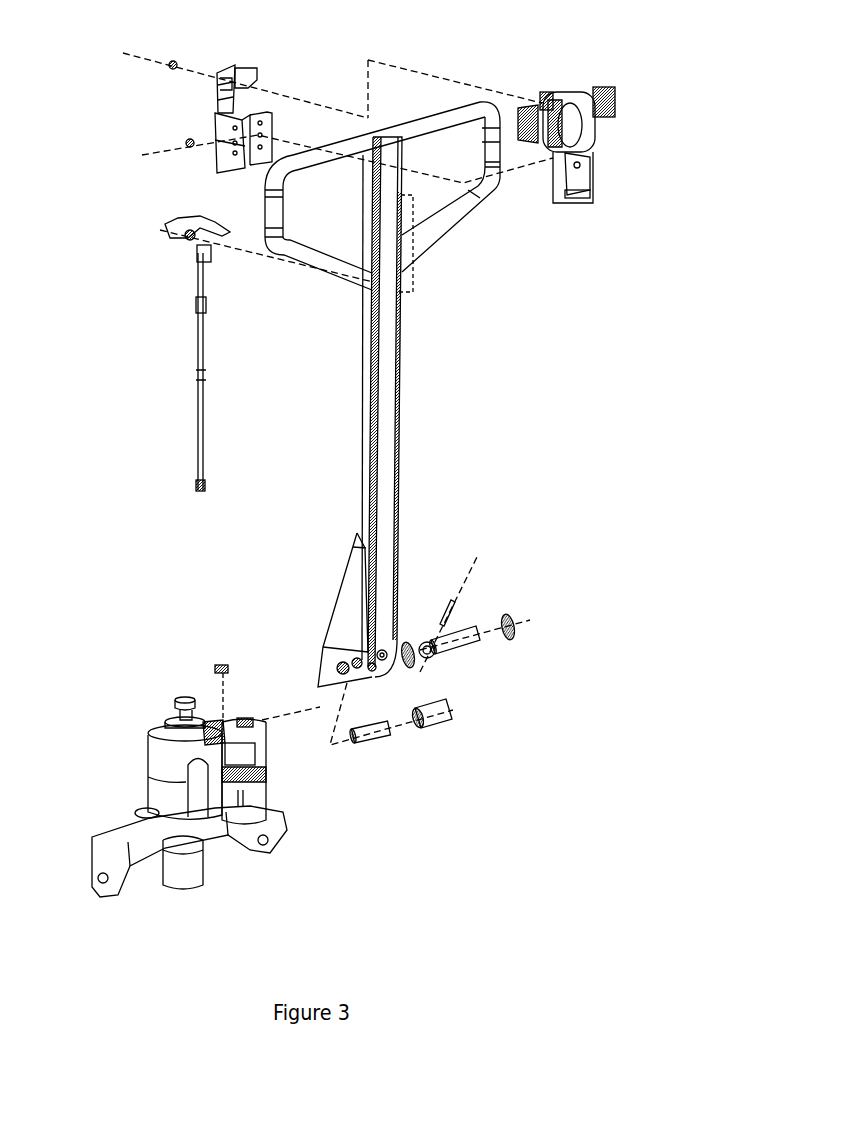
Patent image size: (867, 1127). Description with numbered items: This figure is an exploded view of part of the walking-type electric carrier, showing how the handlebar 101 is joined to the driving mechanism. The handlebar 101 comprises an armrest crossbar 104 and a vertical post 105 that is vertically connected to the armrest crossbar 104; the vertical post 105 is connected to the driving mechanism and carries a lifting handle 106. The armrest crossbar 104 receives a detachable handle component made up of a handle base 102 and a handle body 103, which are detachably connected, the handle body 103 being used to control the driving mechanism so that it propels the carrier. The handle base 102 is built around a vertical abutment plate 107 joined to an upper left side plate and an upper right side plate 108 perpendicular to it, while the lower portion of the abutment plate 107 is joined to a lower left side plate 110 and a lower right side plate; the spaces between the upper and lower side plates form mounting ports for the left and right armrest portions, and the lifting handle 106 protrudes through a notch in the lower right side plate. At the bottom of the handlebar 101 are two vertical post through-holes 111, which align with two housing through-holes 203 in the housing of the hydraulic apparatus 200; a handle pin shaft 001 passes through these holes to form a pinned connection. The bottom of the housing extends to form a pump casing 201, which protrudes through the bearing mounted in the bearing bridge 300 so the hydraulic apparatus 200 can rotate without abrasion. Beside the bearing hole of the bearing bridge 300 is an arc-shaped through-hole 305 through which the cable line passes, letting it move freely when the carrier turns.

The handlebar 101 is at (502, 333).
The handle base 102 is at (283, 48).
The handle body 103 is at (562, 72).
The armrest crossbar 104 is at (442, 98).
The vertical post 105 is at (387, 392).
The lifting handle 106 is at (175, 223).
The vertical abutment plate 107 is at (218, 99).
The upper right side plate 108 is at (308, 72).
The lower left side plate 110 is at (227, 157).
The vertical post through-holes 111 is at (323, 647).
The handle pin shaft 001 is at (502, 677).
The hydraulic apparatus 200 is at (178, 683).
The pump casing 201 is at (252, 895).
The housing through-holes 203 is at (222, 733).
The bearing bridge 300 is at (120, 812).
The arc-shaped through-hole 305 is at (148, 810).